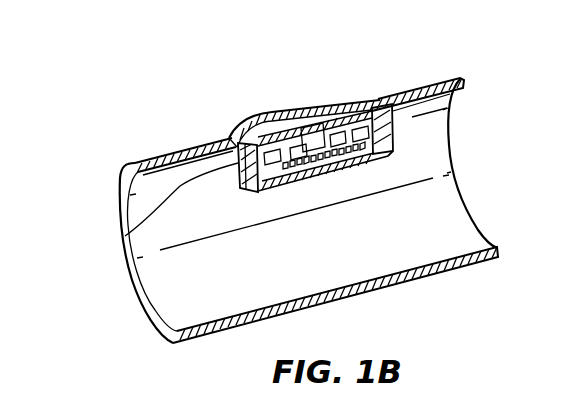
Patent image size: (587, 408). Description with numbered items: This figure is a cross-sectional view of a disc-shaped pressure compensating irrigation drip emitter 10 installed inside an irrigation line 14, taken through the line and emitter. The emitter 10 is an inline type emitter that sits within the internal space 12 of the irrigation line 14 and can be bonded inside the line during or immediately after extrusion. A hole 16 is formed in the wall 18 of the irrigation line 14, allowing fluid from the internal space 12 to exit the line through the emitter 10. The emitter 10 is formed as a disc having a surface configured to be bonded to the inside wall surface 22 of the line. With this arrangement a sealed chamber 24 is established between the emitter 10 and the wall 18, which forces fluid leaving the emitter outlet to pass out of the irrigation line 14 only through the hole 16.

The pressure compensating irrigation drip emitter 10 is at (118, 240).
The internal space 12 is at (437, 207).
The irrigation line 14 is at (165, 158).
The hole 16 is at (317, 103).
The wall 18 is at (432, 85).
The inside wall surface 22 is at (430, 131).
The sealed chamber 24 is at (281, 134).